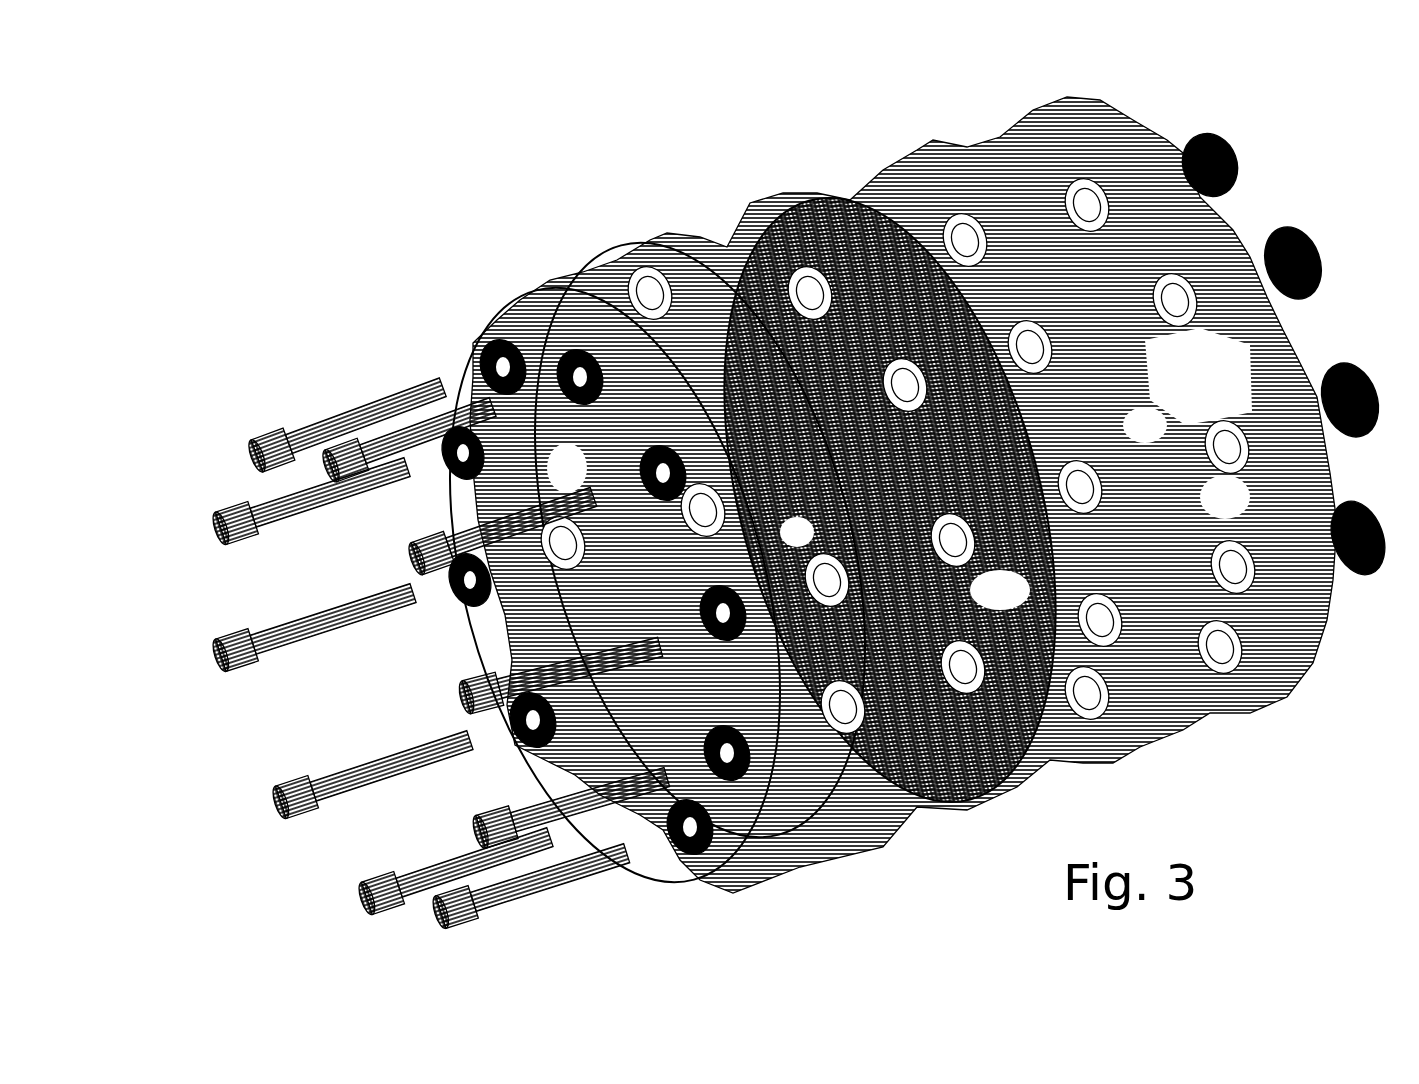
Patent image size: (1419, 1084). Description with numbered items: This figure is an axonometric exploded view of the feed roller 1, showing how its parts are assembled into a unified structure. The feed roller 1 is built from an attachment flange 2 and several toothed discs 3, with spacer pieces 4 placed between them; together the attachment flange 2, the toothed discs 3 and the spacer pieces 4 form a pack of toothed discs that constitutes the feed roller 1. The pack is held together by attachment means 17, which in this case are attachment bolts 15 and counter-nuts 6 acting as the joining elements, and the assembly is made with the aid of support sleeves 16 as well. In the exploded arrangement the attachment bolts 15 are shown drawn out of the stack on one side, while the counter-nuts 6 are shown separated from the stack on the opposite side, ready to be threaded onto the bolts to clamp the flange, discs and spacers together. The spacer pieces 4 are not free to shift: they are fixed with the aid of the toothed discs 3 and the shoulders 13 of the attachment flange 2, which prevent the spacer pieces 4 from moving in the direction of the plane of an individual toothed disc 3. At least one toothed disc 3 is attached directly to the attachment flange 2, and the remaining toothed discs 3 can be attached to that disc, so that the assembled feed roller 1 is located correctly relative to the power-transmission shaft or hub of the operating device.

The feed roller 1 is at (630, 165).
The attachment flange 2 is at (790, 197).
The toothed disc 3 is at (630, 253).
The spacer piece 4 is at (960, 240).
The counter-nut 6 is at (1237, 162).
The shoulder of the attachment flange 13 is at (1157, 337).
The attachment bolt 15 is at (277, 632).
The support sleeve 16 is at (530, 755).
The attachment means 17 is at (305, 827).